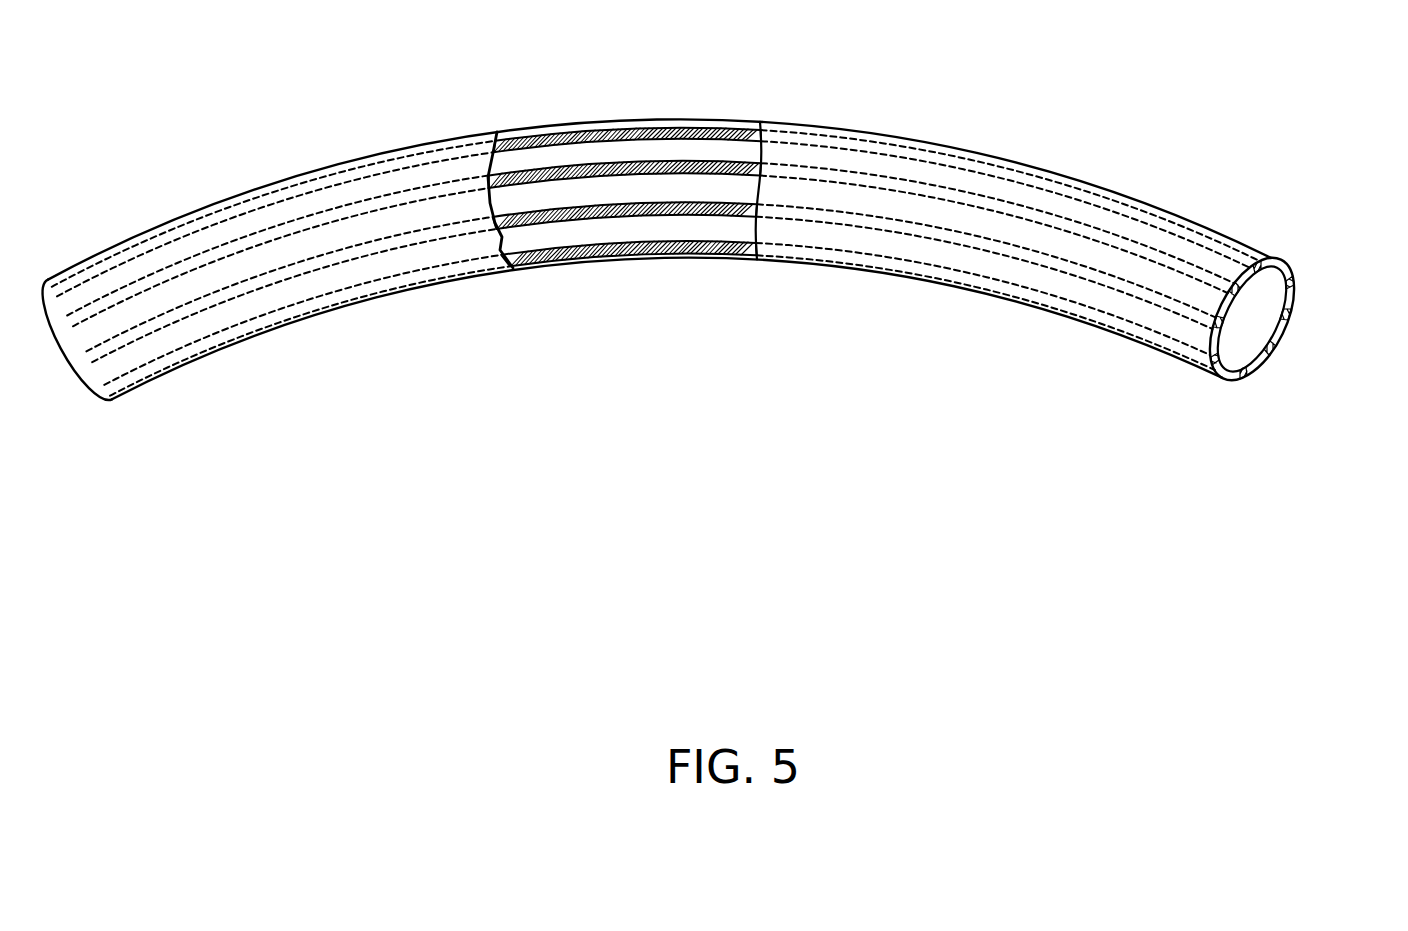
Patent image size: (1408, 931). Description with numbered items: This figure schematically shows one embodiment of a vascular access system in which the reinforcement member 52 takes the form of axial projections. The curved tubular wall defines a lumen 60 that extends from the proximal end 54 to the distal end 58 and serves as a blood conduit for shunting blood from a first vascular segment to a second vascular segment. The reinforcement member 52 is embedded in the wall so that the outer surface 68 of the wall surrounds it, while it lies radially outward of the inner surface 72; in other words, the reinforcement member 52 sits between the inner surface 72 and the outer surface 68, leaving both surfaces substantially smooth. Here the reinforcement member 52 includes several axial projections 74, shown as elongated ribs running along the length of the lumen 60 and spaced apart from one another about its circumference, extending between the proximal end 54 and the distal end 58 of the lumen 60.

The reinforcement member 52 is at (728, 84).
The proximal end 54 is at (104, 184).
The distal end 58 is at (1292, 194).
The lumen 60 is at (1302, 334).
The outer surface 68 is at (433, 141).
The inner surface 72 is at (1263, 363).
The axial projections 74 is at (597, 163).